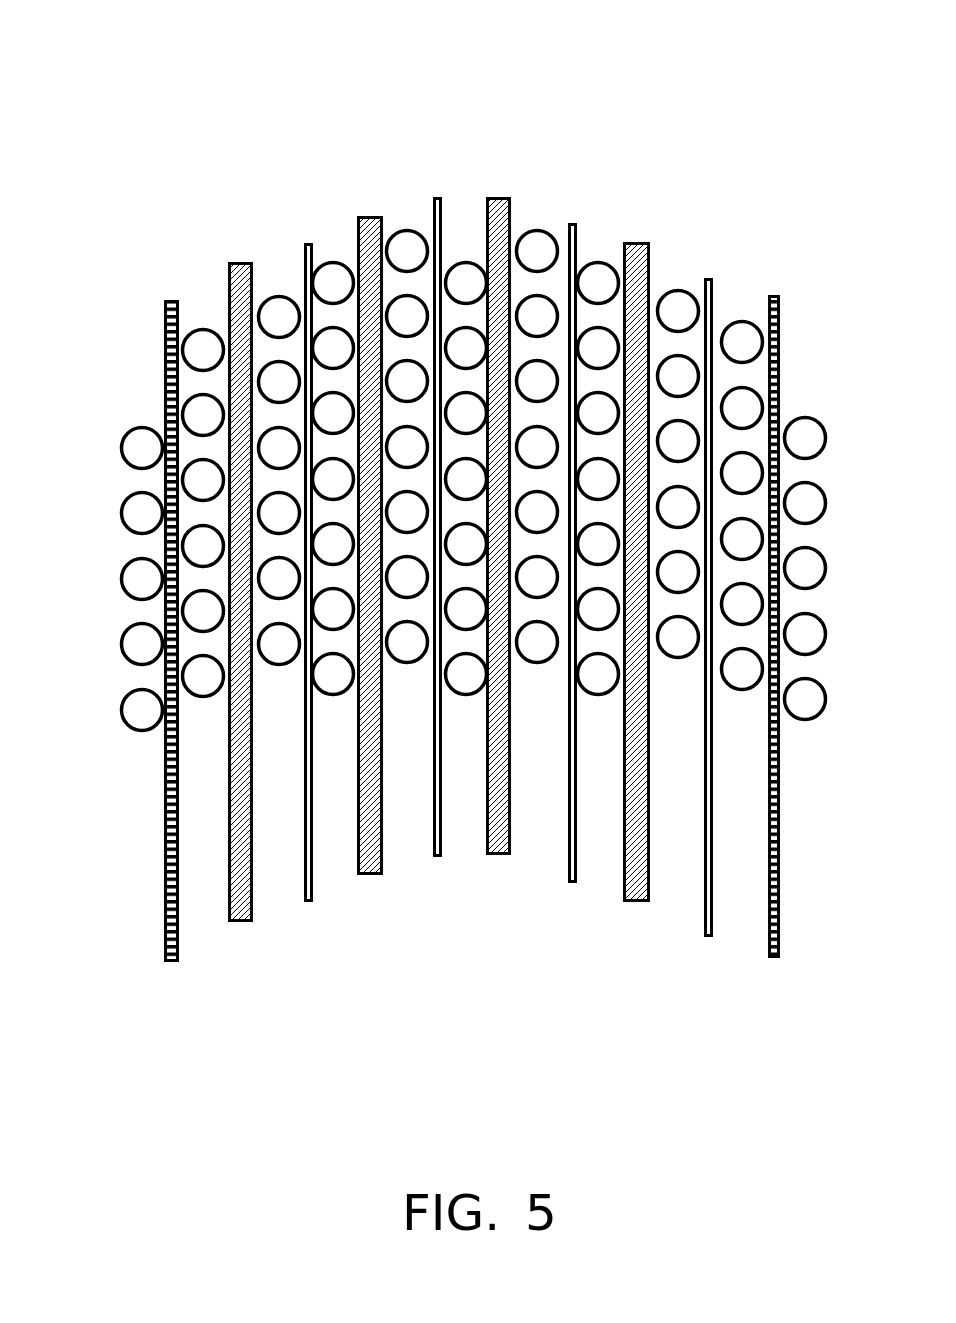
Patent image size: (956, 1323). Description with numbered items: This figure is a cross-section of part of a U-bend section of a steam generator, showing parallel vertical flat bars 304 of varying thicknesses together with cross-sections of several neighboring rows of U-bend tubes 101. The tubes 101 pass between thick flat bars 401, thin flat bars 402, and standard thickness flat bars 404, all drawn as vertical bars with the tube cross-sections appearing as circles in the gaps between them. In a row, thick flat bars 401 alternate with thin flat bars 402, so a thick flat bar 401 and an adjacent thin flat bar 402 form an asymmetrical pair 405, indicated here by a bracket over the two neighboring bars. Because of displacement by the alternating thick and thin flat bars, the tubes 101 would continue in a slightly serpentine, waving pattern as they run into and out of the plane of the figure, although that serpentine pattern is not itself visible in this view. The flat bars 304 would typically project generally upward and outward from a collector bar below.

The flat bars 304 is at (180, 300).
The asymmetrical pair 405 is at (411, 310).
The U-tubes 101 is at (682, 297).
The standard thickness flat bar 404 is at (165, 855).
The thin flat bar 402 is at (304, 866).
The thick flat bar 401 is at (633, 890).